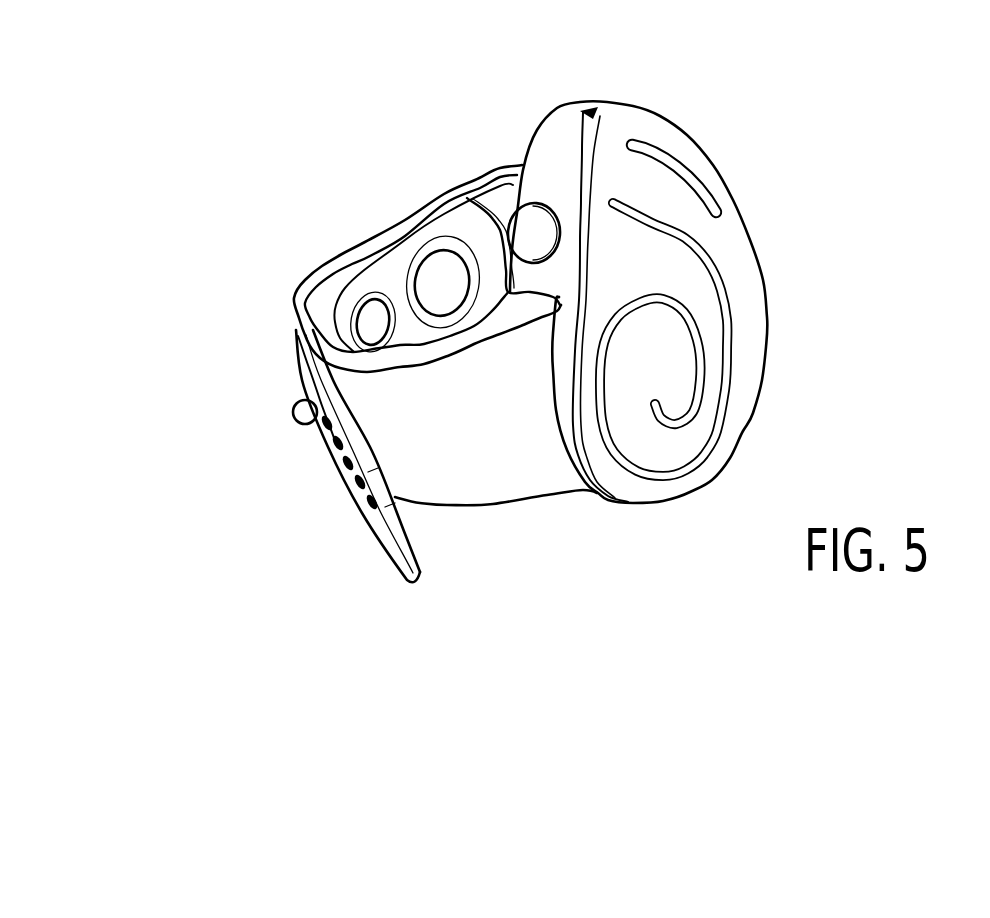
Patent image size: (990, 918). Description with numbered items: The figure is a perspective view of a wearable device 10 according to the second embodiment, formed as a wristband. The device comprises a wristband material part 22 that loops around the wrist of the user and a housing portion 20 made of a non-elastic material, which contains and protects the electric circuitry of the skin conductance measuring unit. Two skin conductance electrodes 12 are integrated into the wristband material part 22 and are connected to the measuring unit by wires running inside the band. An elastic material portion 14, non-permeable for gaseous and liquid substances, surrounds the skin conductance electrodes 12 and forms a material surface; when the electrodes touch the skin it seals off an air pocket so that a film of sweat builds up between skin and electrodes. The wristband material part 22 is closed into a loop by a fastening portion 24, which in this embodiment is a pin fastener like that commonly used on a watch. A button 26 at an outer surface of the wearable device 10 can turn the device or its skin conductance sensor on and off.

The wearable device 10 is at (695, 93).
The skin conductance electrodes 12 is at (440, 287).
The elastic material portion 14 is at (397, 267).
The housing portion 20 is at (750, 280).
The wristband material part 22 is at (493, 473).
The fastening portion 24 is at (266, 413).
The button 26 is at (525, 233).